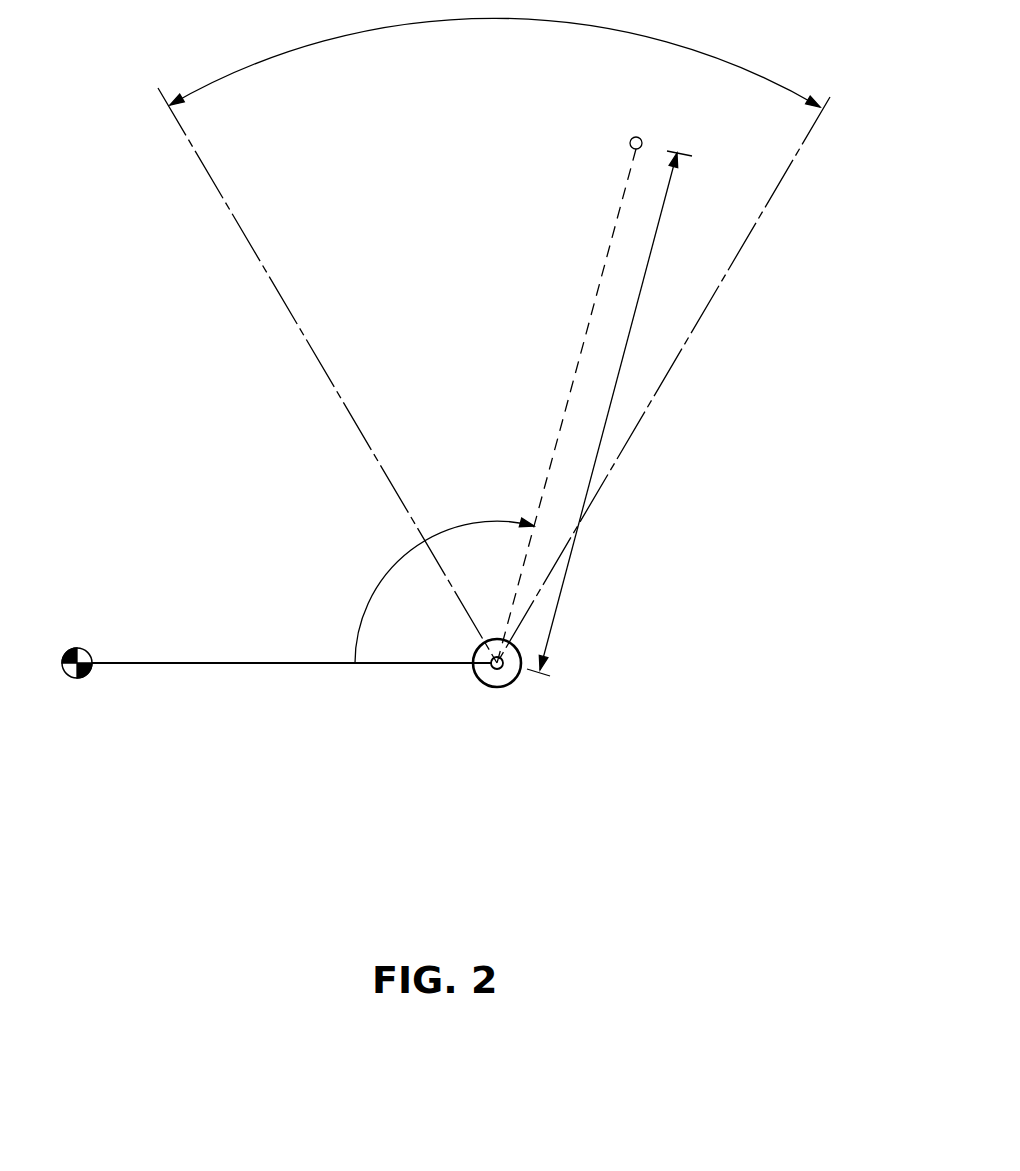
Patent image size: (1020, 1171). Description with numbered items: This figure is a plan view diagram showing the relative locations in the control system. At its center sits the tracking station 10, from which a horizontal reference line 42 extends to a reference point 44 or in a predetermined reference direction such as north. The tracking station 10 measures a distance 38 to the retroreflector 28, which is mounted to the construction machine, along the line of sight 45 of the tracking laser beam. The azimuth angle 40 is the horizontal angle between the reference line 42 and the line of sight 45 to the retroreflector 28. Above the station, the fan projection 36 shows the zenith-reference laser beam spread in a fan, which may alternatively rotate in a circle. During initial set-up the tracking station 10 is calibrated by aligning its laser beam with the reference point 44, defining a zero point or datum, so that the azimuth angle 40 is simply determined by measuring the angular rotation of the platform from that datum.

The tracking station 10 is at (493, 688).
The retroreflector 28 is at (641, 139).
The fan projection 36 is at (636, 33).
The distance 38 is at (660, 226).
The azimuth angle 40 is at (385, 577).
The reference line 42 is at (203, 664).
The reference point 44 is at (98, 652).
The line of sight 45 is at (572, 383).